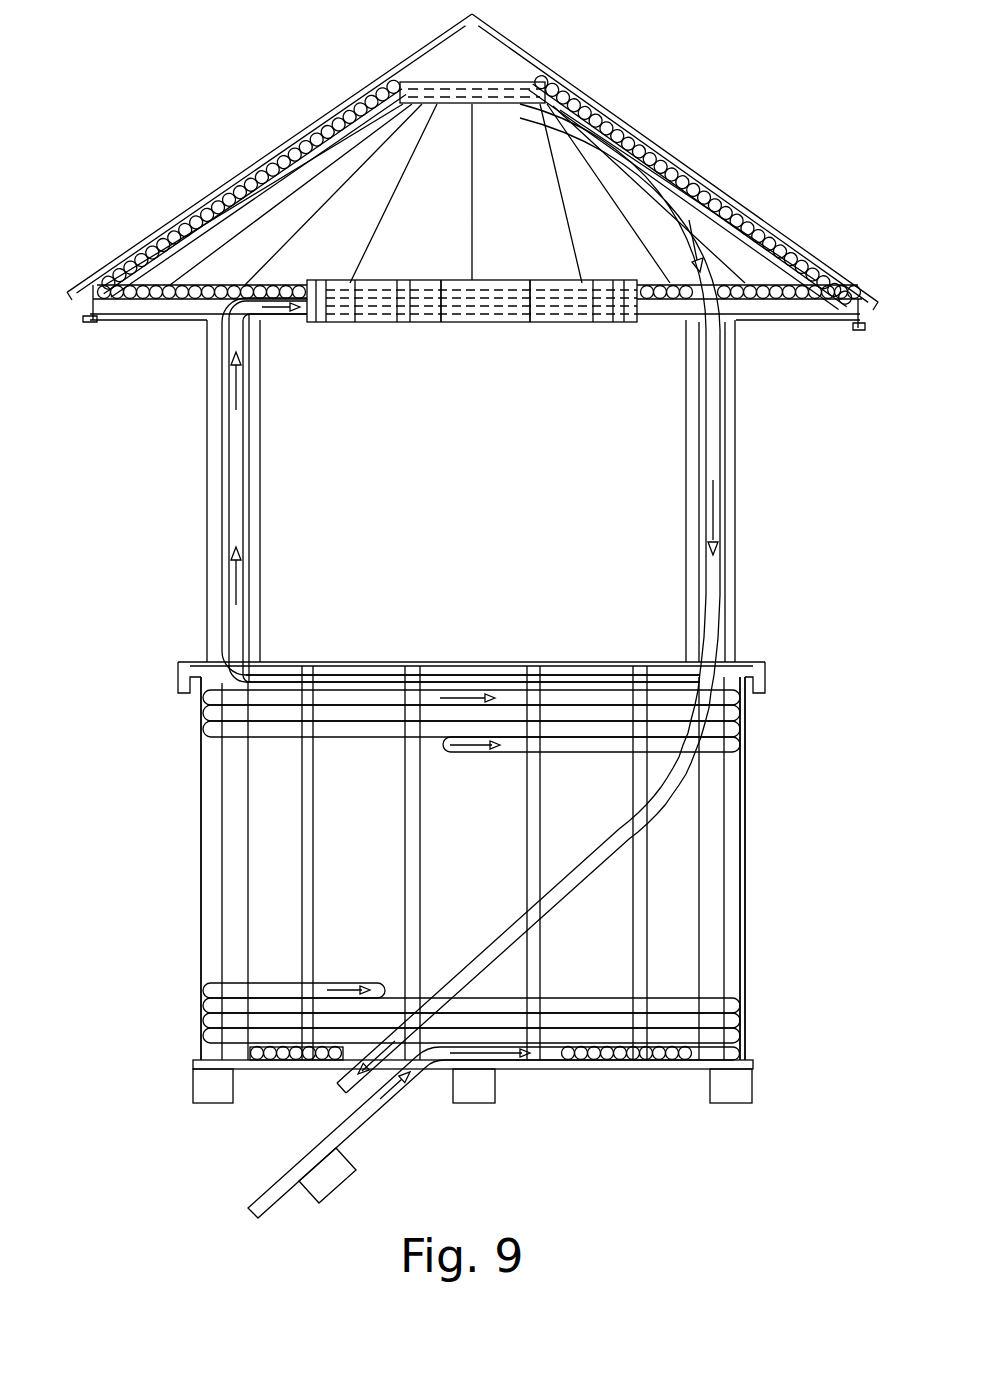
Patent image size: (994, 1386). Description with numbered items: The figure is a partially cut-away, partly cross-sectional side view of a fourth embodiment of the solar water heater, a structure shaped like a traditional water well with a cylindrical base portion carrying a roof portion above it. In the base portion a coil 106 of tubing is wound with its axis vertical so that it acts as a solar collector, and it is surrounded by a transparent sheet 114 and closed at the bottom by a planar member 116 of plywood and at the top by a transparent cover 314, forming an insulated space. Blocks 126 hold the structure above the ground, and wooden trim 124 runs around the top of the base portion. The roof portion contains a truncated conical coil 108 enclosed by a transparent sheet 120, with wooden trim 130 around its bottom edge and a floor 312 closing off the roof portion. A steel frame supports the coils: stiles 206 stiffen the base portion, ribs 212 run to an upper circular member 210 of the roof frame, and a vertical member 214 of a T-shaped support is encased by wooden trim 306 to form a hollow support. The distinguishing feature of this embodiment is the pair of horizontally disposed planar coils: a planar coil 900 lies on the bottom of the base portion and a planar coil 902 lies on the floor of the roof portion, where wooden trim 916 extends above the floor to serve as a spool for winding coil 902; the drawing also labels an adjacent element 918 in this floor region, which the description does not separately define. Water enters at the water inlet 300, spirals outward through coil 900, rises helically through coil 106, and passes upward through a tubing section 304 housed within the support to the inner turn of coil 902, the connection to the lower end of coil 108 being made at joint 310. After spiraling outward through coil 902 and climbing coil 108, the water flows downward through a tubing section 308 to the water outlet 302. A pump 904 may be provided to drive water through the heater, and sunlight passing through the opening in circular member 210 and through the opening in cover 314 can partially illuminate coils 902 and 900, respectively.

The coil 106 is at (745, 738).
The coil 108 is at (663, 158).
The sheet 114 is at (200, 835).
The planar member 116 is at (745, 1066).
The sheet 120 is at (418, 55).
The wooden trim 124 is at (765, 682).
The blocks 126 is at (208, 1090).
The wooden trim 130 is at (88, 318).
The stiles 206 is at (403, 815).
The circular member 210 is at (523, 92).
The ribs 212 is at (462, 197).
The vertical member 214 is at (233, 927).
The water inlet 300 is at (355, 1131).
The water outlet 302 is at (345, 1083).
The tubing section 304 is at (240, 560).
The wooden trim 306 is at (258, 490).
The tubing section 308 is at (718, 447).
The joint 310 is at (266, 322).
The floor 312 is at (178, 320).
The cover 314 is at (478, 658).
The planar coil 900 is at (268, 1062).
The planar coil 902 is at (245, 285).
The pump 904 is at (338, 1190).
The wooden trim 916 is at (528, 323).
The manifold 918 is at (422, 322).